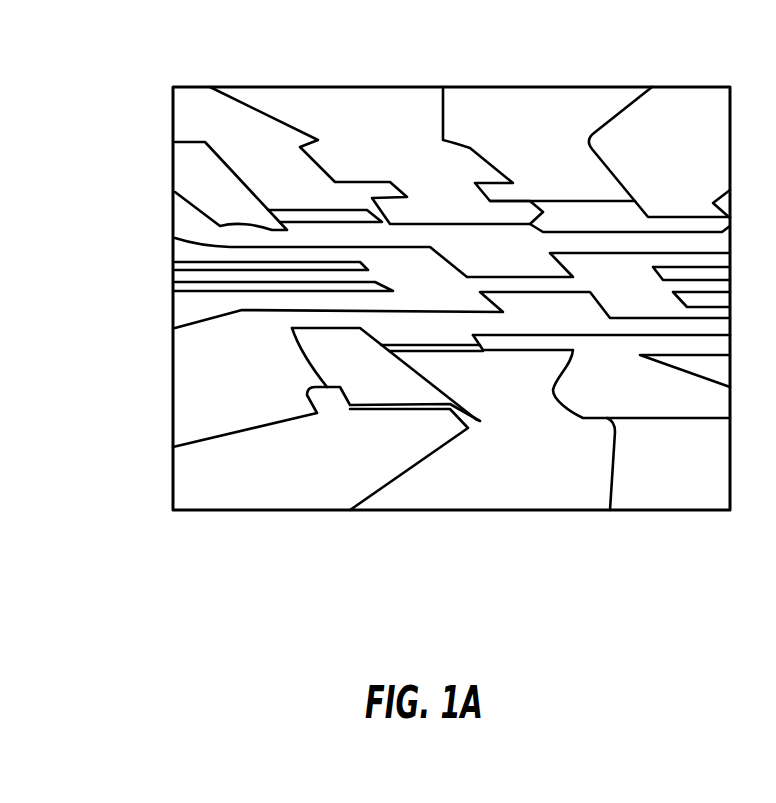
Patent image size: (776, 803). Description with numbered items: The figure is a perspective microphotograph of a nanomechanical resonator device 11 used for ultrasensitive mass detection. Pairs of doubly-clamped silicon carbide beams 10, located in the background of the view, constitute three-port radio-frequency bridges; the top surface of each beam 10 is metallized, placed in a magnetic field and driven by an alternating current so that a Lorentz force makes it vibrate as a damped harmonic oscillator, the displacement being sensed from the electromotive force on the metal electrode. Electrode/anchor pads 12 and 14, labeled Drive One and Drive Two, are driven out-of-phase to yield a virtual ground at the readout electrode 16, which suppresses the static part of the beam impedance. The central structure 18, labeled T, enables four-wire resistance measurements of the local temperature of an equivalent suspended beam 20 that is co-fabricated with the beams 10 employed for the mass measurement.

The beam 10 is at (362, 216).
The integrated circuit cross-section 11 is at (208, 115).
The electrode/anchor pad 12 is at (698, 102).
The electrode/anchor pad 14 is at (195, 160).
The readout electrode 16 is at (382, 95).
The central structure 18 is at (178, 283).
The suspended beam 20 is at (547, 277).